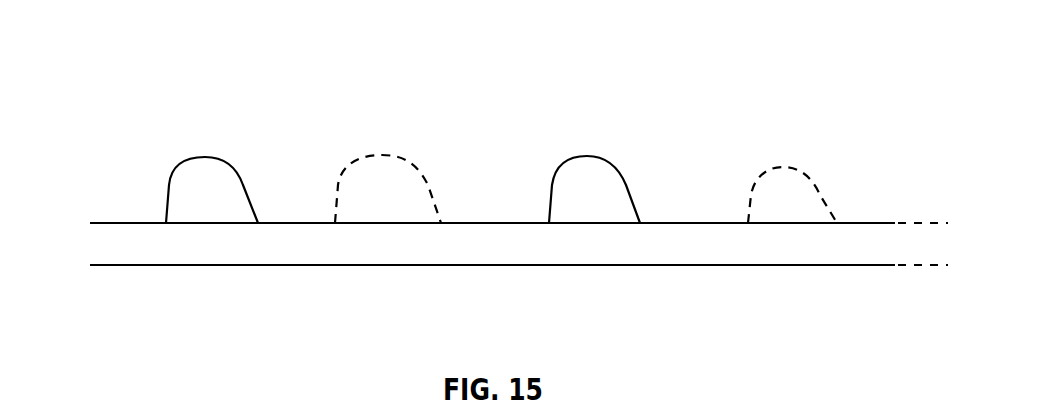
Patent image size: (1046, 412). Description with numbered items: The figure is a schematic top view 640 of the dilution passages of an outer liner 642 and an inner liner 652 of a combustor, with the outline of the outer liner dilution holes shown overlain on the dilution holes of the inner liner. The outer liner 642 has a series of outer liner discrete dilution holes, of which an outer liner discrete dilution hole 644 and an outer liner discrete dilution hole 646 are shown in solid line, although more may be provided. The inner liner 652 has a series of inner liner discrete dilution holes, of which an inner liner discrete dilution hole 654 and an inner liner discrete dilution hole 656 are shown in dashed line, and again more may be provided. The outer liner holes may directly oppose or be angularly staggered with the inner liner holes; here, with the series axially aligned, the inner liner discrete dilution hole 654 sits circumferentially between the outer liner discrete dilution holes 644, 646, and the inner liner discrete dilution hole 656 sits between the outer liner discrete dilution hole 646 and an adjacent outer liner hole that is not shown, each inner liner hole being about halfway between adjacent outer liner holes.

The top view 640 is at (227, 74).
The outer liner 642 is at (102, 225).
The outer liner discrete dilution hole 644 is at (176, 170).
The outer liner discrete dilution hole 646 is at (617, 164).
The inner liner 652 is at (915, 267).
The inner liner discrete dilution hole 654 is at (347, 170).
The inner liner discrete dilution hole 656 is at (813, 178).